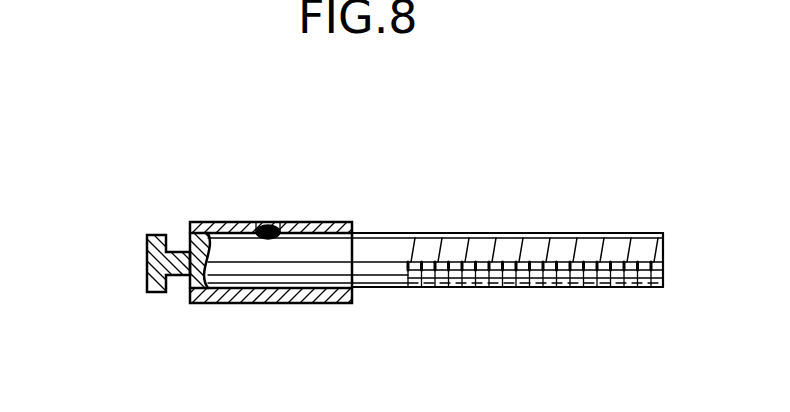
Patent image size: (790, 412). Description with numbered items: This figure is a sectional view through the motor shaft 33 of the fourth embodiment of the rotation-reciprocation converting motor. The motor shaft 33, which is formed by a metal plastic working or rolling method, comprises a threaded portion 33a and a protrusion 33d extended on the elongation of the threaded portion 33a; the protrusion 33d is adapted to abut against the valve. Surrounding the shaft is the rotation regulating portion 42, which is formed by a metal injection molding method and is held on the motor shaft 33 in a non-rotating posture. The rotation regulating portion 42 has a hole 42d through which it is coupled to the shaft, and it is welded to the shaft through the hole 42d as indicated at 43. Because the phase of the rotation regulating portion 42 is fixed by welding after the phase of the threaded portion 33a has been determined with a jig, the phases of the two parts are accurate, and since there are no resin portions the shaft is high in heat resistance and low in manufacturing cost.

The motor shaft 33 is at (470, 171).
The threaded portion 33a is at (557, 232).
The protrusion 33d is at (147, 258).
The rotation regulating portion 42 is at (280, 303).
The hole 42d is at (263, 222).
The weld 43 is at (275, 222).